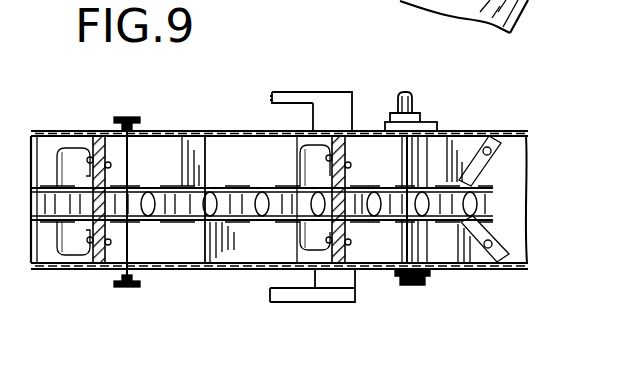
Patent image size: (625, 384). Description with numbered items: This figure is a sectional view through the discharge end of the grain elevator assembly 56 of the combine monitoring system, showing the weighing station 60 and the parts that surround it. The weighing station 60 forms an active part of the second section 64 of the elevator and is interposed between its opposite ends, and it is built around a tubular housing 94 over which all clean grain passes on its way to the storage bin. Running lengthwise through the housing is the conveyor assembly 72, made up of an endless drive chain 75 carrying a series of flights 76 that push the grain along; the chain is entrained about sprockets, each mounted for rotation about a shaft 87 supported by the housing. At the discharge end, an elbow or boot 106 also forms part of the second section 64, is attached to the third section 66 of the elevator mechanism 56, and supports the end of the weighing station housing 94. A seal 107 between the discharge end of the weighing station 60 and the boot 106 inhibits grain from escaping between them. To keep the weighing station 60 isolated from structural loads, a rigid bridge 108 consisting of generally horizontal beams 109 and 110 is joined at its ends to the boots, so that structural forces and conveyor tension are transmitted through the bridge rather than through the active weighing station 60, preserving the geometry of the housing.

The elevator assembly 56 is at (203, 127).
The weighing station 60 is at (62, 276).
The second section 64 is at (60, 137).
The third section 66 is at (560, 0).
The conveyor assembly 72 is at (224, 170).
The endless drive chain 75 is at (190, 221).
The flights 76 is at (108, 150).
The shaft 87 is at (412, 100).
The tubular housing 94 is at (50, 150).
The boot 106 is at (512, 129).
The seal 107 is at (168, 75).
The rigid bridge 108 is at (282, 308).
The horizontal beam 109 is at (318, 303).
The horizontal beam 110 is at (300, 90).